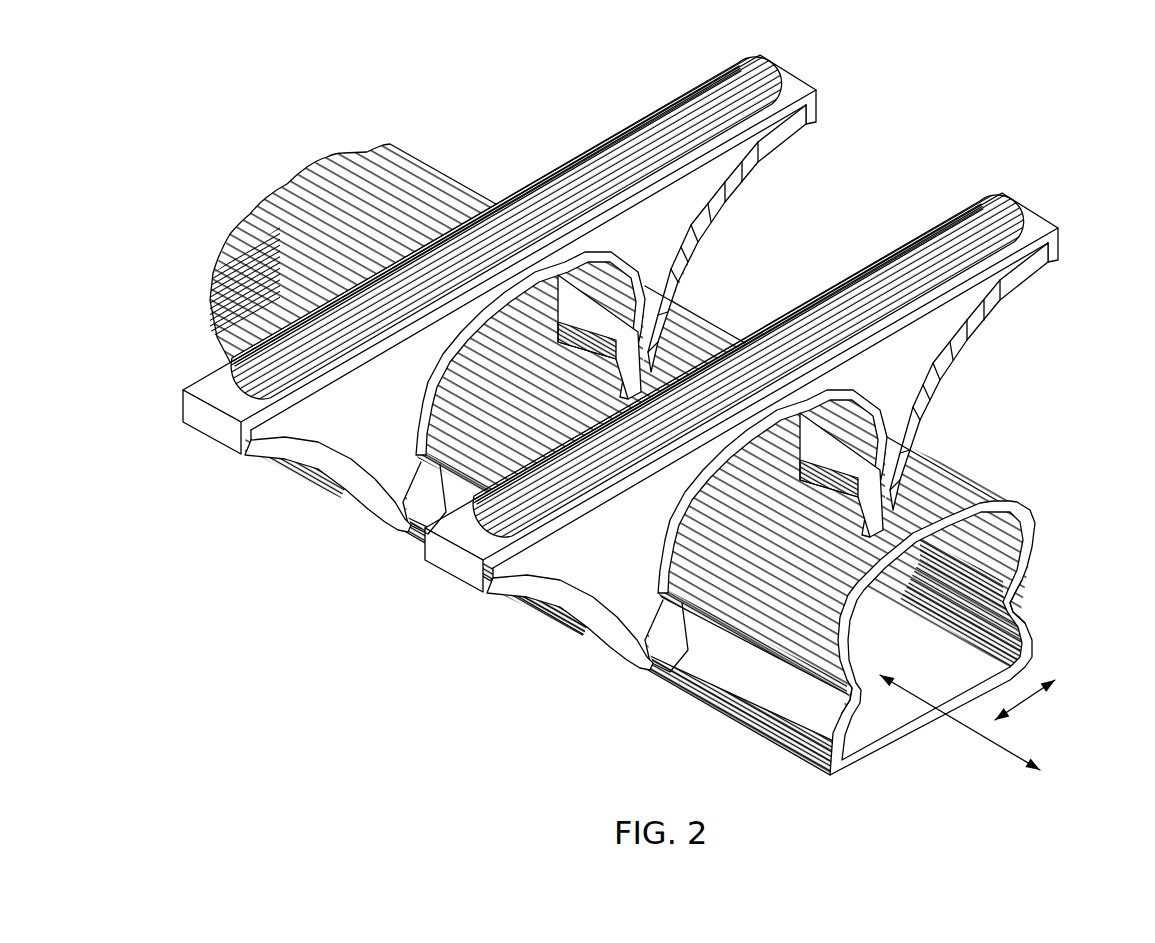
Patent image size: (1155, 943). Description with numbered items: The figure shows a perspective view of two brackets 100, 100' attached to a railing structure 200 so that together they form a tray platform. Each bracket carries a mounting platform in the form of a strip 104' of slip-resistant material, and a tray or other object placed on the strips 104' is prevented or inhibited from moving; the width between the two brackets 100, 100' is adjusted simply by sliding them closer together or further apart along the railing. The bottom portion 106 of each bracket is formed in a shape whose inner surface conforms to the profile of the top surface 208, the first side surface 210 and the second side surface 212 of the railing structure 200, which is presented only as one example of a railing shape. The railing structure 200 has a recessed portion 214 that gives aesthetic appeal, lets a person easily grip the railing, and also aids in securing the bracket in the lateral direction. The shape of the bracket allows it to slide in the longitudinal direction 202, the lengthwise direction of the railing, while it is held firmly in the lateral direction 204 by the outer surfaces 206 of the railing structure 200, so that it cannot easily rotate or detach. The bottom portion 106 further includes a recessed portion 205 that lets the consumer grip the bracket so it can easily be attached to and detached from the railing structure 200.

The railing structure 200 is at (450, 106).
The bracket 100 is at (883, 419).
The second bracket 100' is at (567, 281).
The strip 104' is at (627, 297).
The bottom portion 106 is at (668, 238).
The longitudinal direction 202 is at (985, 735).
The lateral direction 204 is at (1022, 700).
The recessed portion 205 is at (560, 566).
The outer surfaces 206 is at (733, 468).
The top surface 208 is at (953, 482).
The first side surface 210 is at (770, 656).
The second side surface 212 is at (1039, 517).
The recessed portion 214 is at (1022, 622).